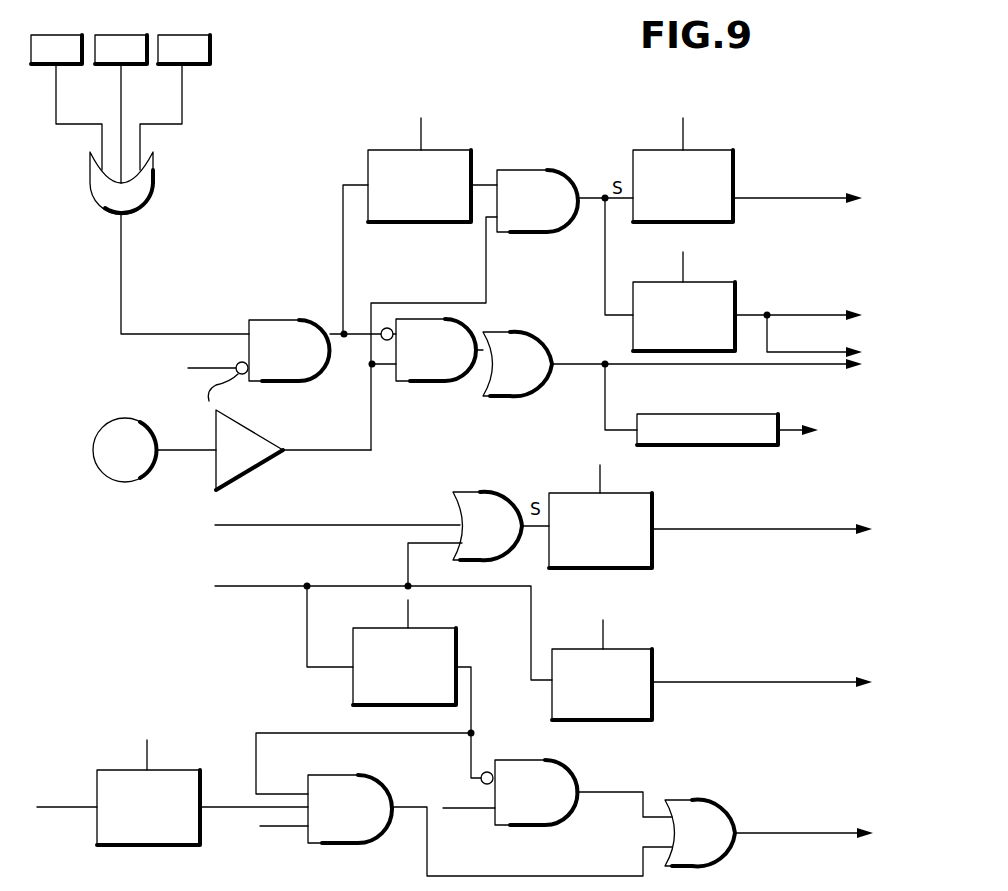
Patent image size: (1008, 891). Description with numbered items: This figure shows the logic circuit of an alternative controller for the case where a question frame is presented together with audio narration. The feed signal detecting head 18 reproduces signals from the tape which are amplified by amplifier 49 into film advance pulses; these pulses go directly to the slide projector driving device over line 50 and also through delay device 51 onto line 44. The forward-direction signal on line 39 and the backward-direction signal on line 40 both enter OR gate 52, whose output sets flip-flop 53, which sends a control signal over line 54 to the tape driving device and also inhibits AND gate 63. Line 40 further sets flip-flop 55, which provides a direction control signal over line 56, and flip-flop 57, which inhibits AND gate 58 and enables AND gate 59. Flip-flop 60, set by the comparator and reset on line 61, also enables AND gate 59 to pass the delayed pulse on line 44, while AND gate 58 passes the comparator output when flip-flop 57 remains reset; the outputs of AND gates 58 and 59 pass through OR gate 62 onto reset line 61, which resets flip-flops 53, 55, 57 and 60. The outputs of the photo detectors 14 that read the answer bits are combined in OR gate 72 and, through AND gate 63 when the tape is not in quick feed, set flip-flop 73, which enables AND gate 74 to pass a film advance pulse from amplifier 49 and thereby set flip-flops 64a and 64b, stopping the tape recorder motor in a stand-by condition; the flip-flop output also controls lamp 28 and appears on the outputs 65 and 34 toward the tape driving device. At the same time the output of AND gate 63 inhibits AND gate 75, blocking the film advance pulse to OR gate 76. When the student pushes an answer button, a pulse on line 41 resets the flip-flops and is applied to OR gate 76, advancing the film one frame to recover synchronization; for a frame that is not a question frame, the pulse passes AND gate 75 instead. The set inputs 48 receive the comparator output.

The photo detectors 14 is at (180, 31).
The OR gate 72 is at (153, 201).
The flip-flop 73 is at (473, 170).
The reset line 61 is at (421, 130).
The AND gate 74 is at (562, 173).
The line 44 is at (683, 130).
The flip-flop 64a is at (735, 165).
The flip-flop 64b is at (737, 297).
The output line 65 is at (818, 198).
The line 41 is at (683, 266).
The lamp 28 is at (818, 315).
The output line 34 is at (818, 352).
The line 50 is at (812, 370).
The delay device 51 is at (742, 447).
The AND gate 63 is at (323, 370).
The line 54 is at (188, 369).
The feed signal detecting head 18 is at (141, 426).
The amplifier 49 is at (254, 433).
The AND gate 75 is at (425, 383).
The OR gate 76 is at (553, 331).
The line 39 is at (225, 525).
The line 40 is at (225, 586).
The OR gate 52 is at (500, 496).
The flip-flop 53 is at (653, 520).
The flip-flop 57 is at (458, 651).
The flip-flop 55 is at (653, 676).
The line 56 is at (826, 682).
The flip-flop 60 is at (203, 783).
The input line 48 is at (57, 807).
The AND gate 59 is at (384, 787).
The AND gate 58 is at (566, 776).
The OR gate 62 is at (722, 810).